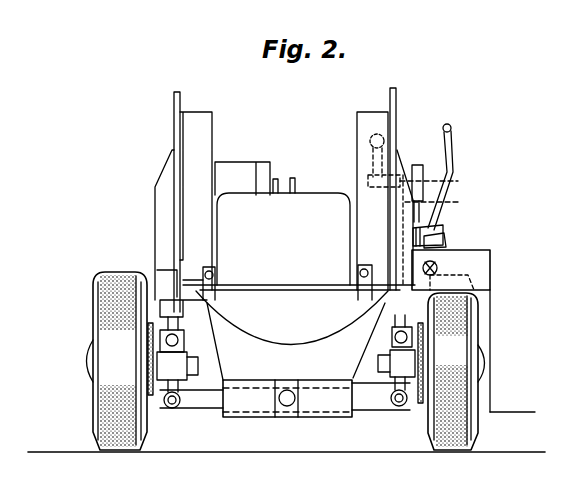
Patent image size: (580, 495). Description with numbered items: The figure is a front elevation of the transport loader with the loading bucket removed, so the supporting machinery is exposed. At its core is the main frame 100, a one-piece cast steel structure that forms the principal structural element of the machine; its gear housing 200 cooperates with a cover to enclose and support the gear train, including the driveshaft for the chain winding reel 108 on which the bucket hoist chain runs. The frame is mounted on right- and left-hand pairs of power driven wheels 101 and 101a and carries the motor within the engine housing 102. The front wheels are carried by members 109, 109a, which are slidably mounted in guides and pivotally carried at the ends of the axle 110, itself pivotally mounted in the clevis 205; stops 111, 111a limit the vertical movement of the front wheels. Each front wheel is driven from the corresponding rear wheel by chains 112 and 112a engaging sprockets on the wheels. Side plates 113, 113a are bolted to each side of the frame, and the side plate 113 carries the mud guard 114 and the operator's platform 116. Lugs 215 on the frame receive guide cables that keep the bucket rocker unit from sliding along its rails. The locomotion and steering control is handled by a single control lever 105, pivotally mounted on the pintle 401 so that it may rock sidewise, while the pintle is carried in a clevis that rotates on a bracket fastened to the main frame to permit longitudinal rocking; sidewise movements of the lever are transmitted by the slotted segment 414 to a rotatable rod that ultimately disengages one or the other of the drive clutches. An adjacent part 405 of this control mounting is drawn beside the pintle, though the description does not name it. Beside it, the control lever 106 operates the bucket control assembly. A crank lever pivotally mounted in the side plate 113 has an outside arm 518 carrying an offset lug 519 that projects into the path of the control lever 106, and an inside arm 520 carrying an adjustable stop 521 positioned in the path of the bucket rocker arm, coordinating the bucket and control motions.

The main frame 100 is at (300, 302).
The right-hand power driven wheels 101 is at (430, 446).
The left-hand power driven wheels 101a is at (128, 452).
The engine housing 102 is at (322, 192).
The control lever 105 is at (452, 128).
The control lever 106 is at (420, 168).
The chain winding reel 108 is at (293, 177).
The front wheel carrying member 109 is at (398, 408).
The front wheel carrying member 109a is at (200, 382).
The axle 110 is at (215, 412).
The stop 111 is at (392, 340).
The stop 111a is at (200, 338).
The chain 112 is at (424, 332).
The chain 112a is at (166, 406).
The side plate 113 is at (397, 95).
The side plate 113a is at (174, 101).
The mud guard 114 is at (485, 270).
The operator's platform 116 is at (522, 412).
The gear housing 200 is at (244, 165).
The clevis 205 is at (276, 397).
The lugs 215 is at (358, 270).
The pintle 401 is at (437, 266).
The cam block 405 is at (444, 228).
The slotted segment 414 is at (447, 240).
The outside arm 518 is at (442, 181).
The offset lug 519 is at (444, 230).
The inside arm 520 is at (370, 158).
The adjustable stop 521 is at (368, 136).